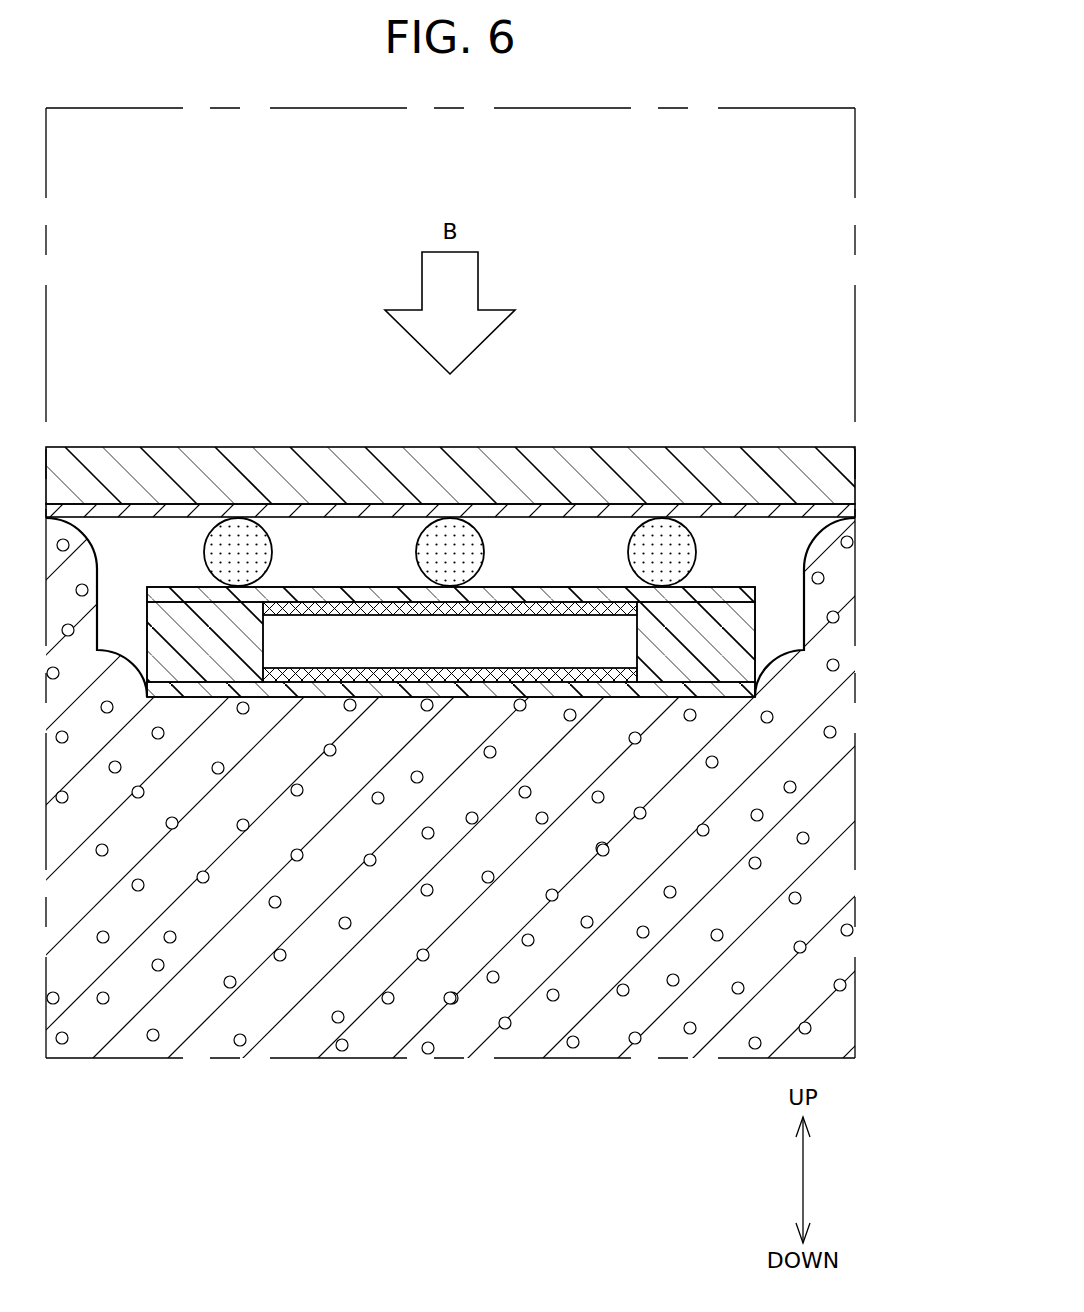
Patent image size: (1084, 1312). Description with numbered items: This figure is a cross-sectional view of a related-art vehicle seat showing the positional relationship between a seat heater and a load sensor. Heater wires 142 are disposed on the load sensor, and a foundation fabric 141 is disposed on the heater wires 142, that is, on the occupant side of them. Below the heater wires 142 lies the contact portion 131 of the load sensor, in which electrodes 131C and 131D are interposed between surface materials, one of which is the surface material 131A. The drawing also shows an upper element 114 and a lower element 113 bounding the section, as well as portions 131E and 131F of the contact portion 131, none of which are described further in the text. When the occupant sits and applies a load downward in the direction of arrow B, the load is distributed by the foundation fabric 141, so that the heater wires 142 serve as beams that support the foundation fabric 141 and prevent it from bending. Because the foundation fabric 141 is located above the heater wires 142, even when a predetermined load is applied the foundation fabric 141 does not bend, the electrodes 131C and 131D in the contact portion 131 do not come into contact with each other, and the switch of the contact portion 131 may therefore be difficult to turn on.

The lower housing (base member) 113 is at (822, 805).
The upper plate (cover member) 114 is at (777, 475).
The contact portion 131 is at (550, 527).
The surface material 131A is at (723, 593).
The electrode 131C is at (398, 604).
The electrode 131D is at (510, 678).
The internal cavity 131E is at (566, 640).
The side wall portion 131F is at (720, 638).
The foundation fabric 141 is at (733, 515).
The heater wires 142 is at (242, 548).